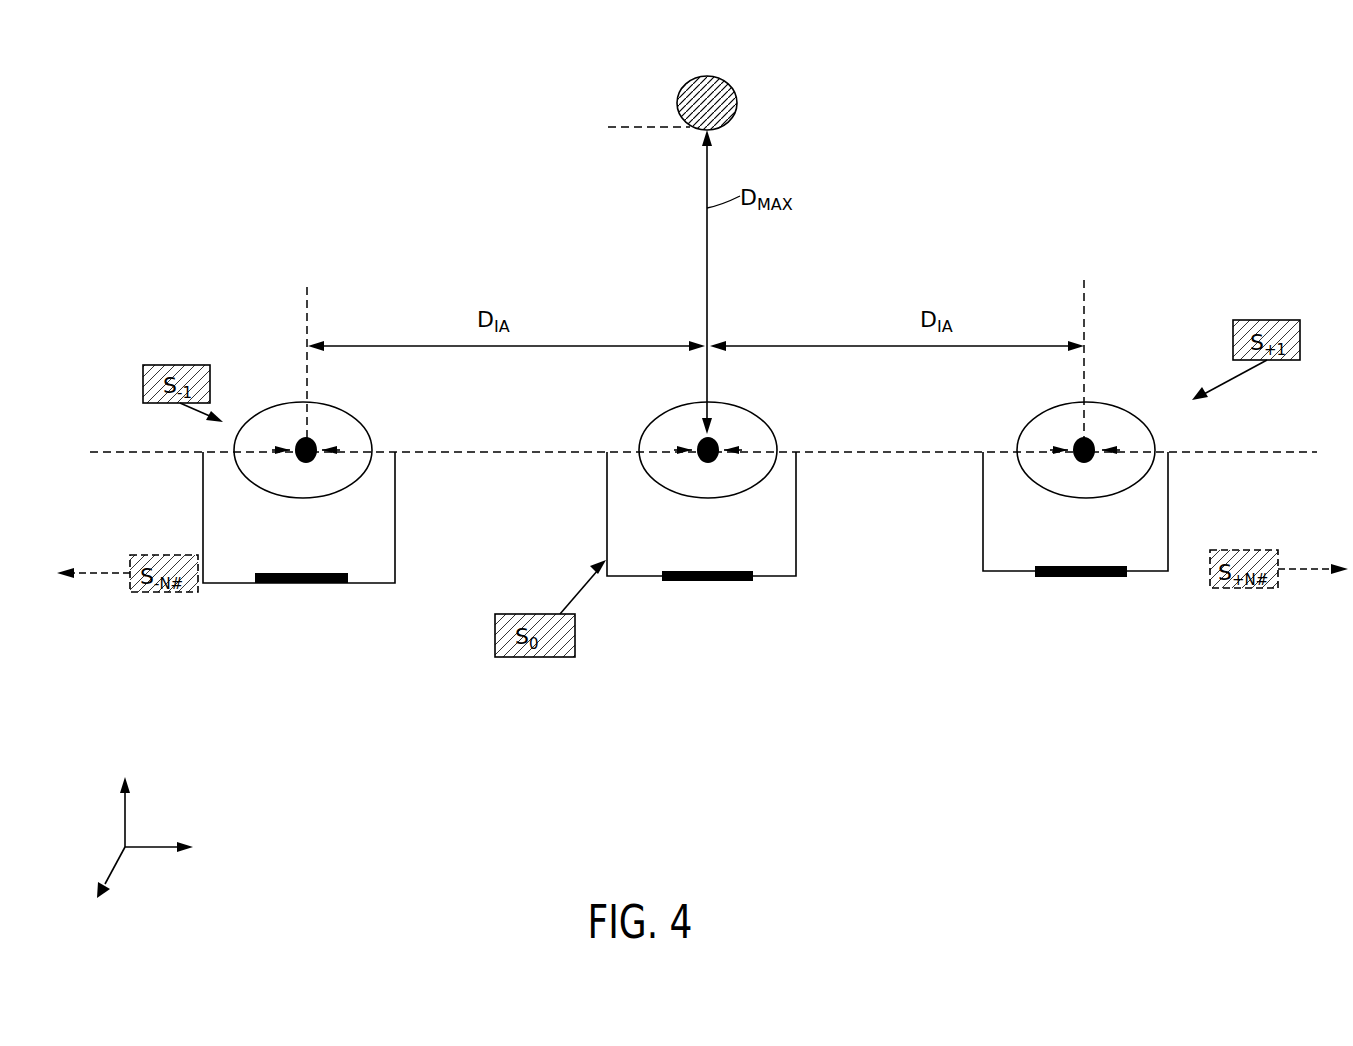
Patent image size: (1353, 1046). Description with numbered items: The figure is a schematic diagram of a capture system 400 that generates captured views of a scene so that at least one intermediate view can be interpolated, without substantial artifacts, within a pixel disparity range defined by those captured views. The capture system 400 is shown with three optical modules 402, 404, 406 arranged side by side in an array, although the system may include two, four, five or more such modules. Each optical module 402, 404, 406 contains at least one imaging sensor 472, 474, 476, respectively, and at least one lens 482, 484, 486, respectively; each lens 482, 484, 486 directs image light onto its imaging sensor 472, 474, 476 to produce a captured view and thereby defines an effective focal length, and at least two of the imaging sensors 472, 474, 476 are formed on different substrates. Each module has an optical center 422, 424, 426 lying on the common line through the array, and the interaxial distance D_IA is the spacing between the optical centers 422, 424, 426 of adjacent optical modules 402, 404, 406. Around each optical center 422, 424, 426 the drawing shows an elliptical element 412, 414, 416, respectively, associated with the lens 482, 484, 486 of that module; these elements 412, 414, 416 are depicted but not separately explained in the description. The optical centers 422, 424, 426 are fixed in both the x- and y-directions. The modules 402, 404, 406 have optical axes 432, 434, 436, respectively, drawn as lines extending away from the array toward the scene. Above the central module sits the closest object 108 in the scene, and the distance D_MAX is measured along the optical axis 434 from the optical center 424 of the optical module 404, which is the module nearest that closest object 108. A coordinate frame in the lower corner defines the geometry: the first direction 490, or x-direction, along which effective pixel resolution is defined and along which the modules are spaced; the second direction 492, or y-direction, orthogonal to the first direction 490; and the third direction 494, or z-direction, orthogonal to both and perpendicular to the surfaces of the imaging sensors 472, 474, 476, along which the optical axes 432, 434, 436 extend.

The closest object 108 is at (728, 83).
The capture system 400 is at (470, 742).
The optical module 402 is at (1013, 571).
The optical module 404 is at (640, 576).
The optical module 406 is at (240, 583).
The sensing region 412 is at (1121, 401).
The sensing region 414 is at (763, 418).
The sensing region 416 is at (360, 418).
The optical center 422 is at (1084, 463).
The optical center 424 is at (707, 465).
The optical center 426 is at (306, 463).
The optical axis 432 is at (1090, 305).
The optical axis 434 is at (708, 308).
The optical axis 436 is at (312, 303).
The imaging sensor 472 is at (1103, 577).
The imaging sensor 474 is at (735, 581).
The imaging sensor 476 is at (305, 583).
The lens 482 is at (1143, 433).
The lens 484 is at (670, 422).
The lens 486 is at (263, 420).
The first direction 490 is at (158, 848).
The second direction 492 is at (126, 805).
The third direction 494 is at (118, 858).